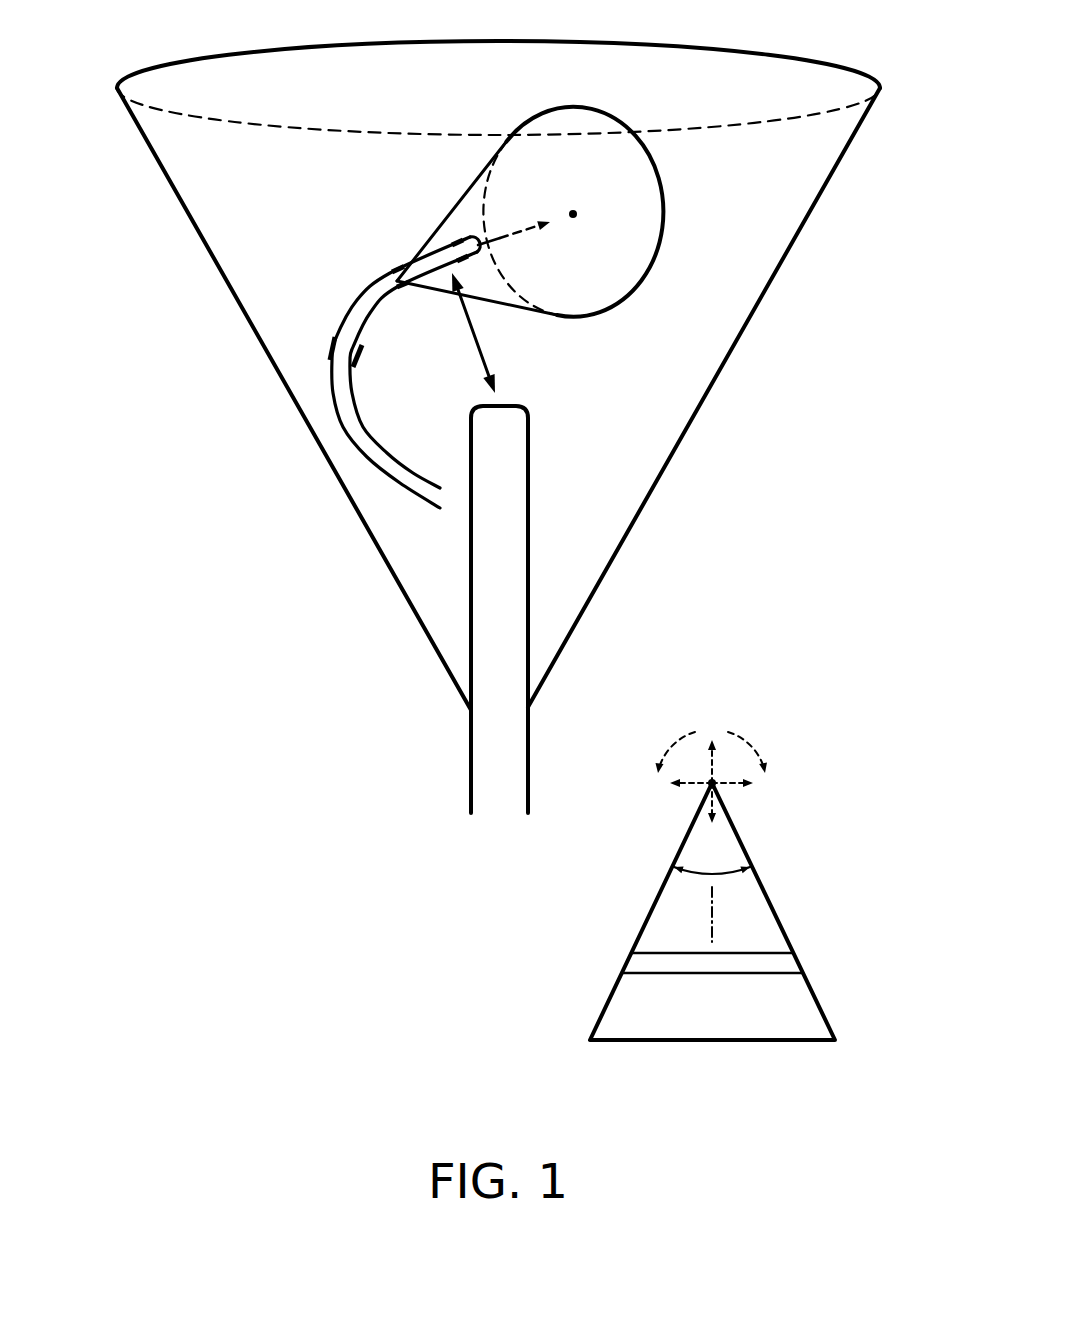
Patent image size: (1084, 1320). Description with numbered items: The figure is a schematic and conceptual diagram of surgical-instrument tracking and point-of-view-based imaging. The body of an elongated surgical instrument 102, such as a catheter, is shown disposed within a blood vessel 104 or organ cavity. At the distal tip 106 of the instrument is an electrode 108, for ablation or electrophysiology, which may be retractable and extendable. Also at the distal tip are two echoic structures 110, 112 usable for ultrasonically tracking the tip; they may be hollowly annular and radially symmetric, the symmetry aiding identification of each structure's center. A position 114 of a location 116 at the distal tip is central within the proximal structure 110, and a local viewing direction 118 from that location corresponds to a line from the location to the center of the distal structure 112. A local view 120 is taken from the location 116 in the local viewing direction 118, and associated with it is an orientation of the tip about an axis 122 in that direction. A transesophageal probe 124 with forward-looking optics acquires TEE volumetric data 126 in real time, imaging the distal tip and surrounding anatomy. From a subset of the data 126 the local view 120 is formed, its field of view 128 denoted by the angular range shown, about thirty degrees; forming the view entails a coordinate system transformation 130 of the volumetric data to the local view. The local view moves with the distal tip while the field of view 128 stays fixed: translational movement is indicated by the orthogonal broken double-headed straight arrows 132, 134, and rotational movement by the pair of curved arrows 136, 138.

The elongated surgical instrument 102 is at (352, 270).
The blood vessel 104 is at (330, 348).
The distal tip 106 is at (453, 222).
The electrode 108 is at (500, 235).
The proximal echoic structure 110 is at (403, 290).
The distal echoic structure 112 is at (477, 258).
The position 114 is at (400, 276).
The location 116 is at (387, 260).
The local viewing direction 118 is at (515, 257).
The local view 120 is at (637, 965).
The axis 122 is at (713, 917).
The transesophageal probe 124 is at (528, 452).
The TEE volumetric data 126 is at (698, 410).
The field of view 128 is at (719, 871).
The coordinate system transformation 130 is at (477, 357).
The broken double-headed straight arrow 132 is at (731, 785).
The broken double-headed straight arrow 134 is at (708, 763).
The curved arrow 136 is at (678, 743).
The curved arrow 138 is at (750, 743).